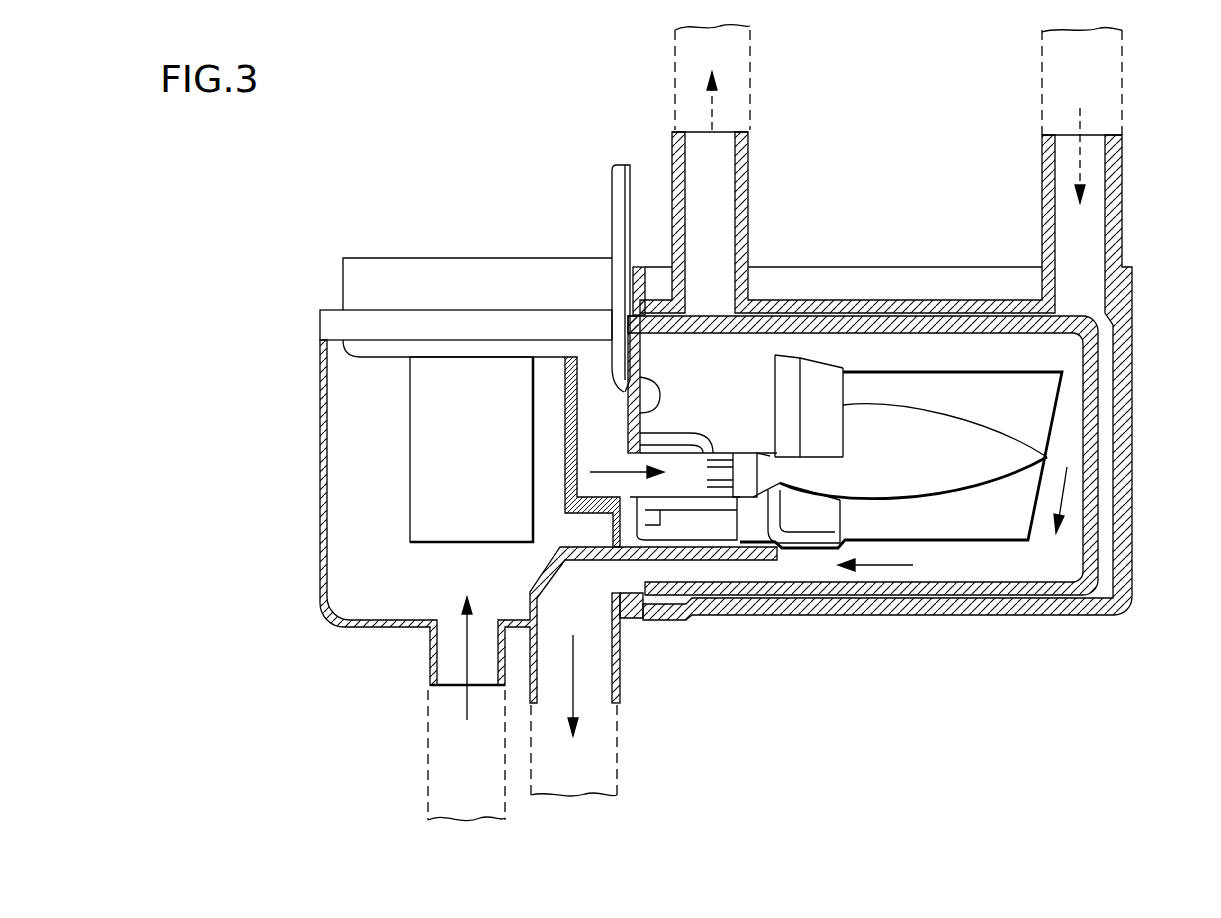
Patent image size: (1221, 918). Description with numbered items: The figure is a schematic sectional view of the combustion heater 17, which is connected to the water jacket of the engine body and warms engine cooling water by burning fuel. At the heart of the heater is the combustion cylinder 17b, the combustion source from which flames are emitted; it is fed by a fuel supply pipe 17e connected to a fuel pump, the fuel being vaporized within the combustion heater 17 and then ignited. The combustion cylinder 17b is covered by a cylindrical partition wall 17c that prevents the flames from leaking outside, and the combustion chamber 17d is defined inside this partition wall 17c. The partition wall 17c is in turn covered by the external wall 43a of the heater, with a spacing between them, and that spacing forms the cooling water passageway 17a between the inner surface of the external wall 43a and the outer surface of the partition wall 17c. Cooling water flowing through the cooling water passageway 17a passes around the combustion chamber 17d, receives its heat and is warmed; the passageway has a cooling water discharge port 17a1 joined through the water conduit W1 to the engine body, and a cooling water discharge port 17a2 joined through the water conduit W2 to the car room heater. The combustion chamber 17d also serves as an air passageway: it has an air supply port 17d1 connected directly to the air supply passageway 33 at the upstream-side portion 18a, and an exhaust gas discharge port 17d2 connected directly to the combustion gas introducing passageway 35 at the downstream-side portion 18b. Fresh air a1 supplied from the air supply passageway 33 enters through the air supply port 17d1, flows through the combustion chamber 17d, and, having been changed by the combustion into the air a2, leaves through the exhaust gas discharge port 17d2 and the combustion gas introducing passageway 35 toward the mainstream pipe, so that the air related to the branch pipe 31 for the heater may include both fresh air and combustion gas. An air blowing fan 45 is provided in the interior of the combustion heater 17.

The combustion heater 17 is at (905, 175).
The cooling water passageway 17a is at (898, 318).
The cooling water discharge port 17a1 is at (1124, 185).
The cooling water discharge port 17a2 is at (752, 160).
The combustion cylinder 17b is at (823, 372).
The partition wall 17c is at (1092, 437).
The combustion chamber 17d is at (1015, 363).
The air supply port 17d1 is at (428, 637).
The exhaust gas discharge port 17d2 is at (625, 645).
The fuel supply pipe 17e is at (612, 205).
The upstream-side portion 18a is at (415, 657).
The downstream-side portion 18b is at (670, 675).
The branch pipe for heater 31 is at (430, 805).
The air supply passageway 33 is at (428, 778).
The combustion gas introducing passageway 35 is at (625, 778).
The external wall 43a is at (955, 615).
The air blowing fan 45 is at (433, 262).
The water conduit W1 is at (1125, 62).
The water conduit W2 is at (672, 32).
The air a1 is at (603, 472).
The air a2 is at (1065, 490).